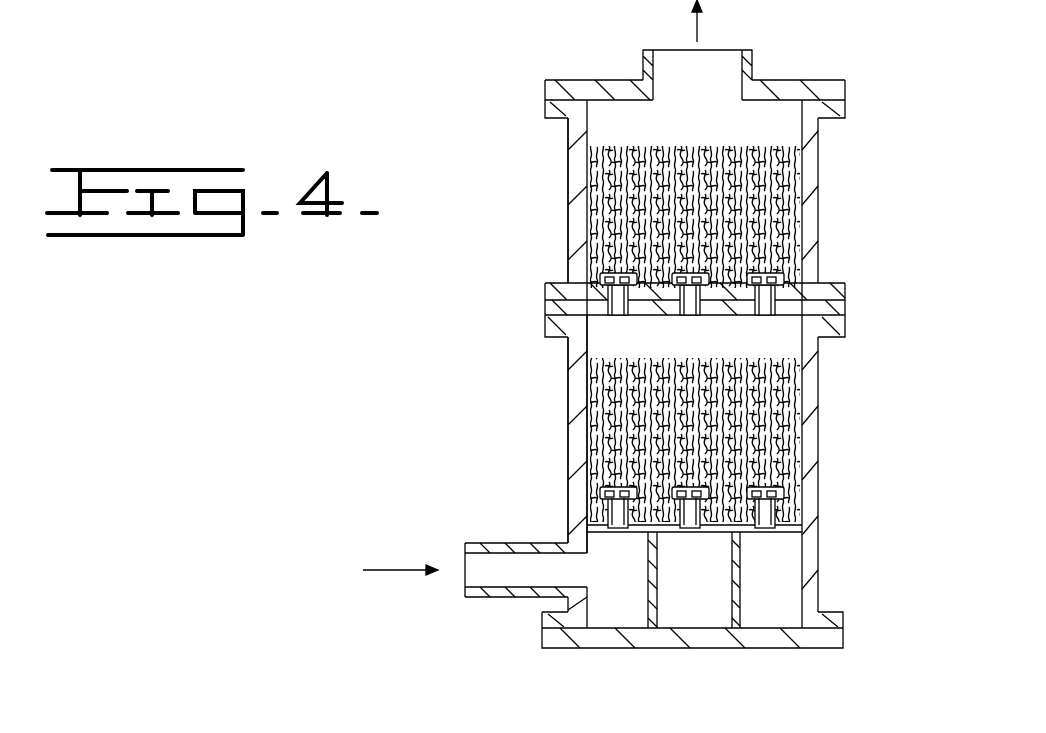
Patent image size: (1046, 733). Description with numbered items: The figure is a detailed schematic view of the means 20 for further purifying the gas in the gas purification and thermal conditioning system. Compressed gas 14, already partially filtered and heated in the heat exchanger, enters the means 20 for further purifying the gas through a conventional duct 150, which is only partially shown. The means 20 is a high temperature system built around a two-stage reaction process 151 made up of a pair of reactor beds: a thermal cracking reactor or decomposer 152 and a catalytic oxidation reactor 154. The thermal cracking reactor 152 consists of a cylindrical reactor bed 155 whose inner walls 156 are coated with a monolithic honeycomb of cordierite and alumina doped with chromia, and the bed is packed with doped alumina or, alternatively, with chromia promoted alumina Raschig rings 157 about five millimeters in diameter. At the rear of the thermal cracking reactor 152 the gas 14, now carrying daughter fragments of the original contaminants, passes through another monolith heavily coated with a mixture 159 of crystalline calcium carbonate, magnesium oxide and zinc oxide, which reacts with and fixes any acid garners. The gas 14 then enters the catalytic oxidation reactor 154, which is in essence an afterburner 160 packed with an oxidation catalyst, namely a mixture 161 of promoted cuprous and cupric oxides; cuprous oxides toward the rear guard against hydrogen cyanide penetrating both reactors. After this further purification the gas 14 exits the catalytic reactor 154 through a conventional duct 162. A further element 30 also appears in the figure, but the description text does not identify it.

The compressed gas 14 is at (752, 5).
The means for further purifying the gas 20 is at (478, 342).
The conduit 30 is at (231, 5).
The duct 150 is at (493, 598).
The two-stage reaction process 151 is at (877, 385).
The thermal cracking reactor 152 is at (568, 410).
The catalytic oxidation reactor 154 is at (568, 229).
The cylindrical reactor bed 155 is at (568, 483).
The inner walls 156 is at (800, 333).
The Raschig rings 157 is at (610, 355).
The mixture of calcium carbonate, magnesium oxide and zinc oxide 159 is at (826, 470).
The afterburner 160 is at (568, 337).
The mixture of promoted copper oxides 161 is at (610, 168).
The duct 162 is at (752, 62).